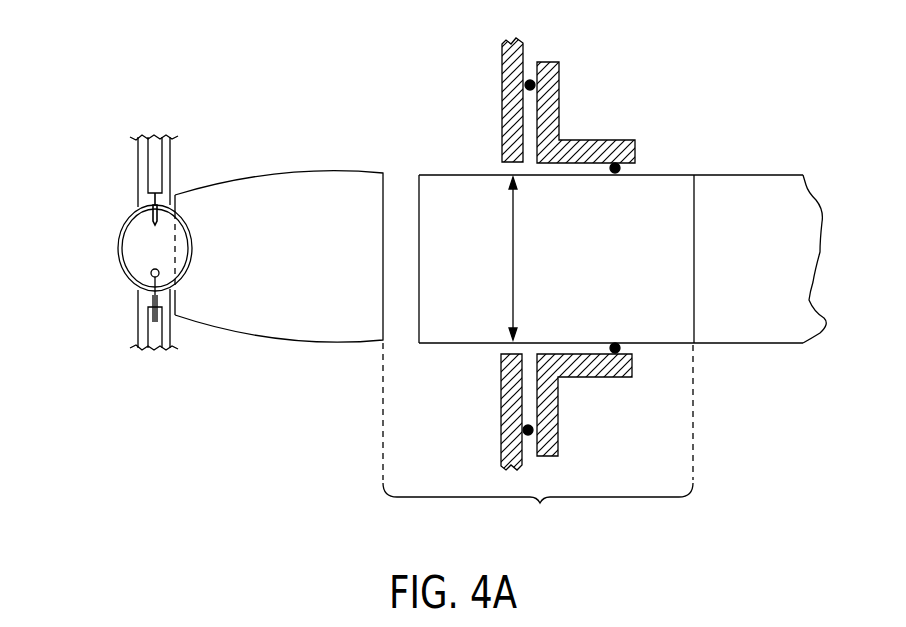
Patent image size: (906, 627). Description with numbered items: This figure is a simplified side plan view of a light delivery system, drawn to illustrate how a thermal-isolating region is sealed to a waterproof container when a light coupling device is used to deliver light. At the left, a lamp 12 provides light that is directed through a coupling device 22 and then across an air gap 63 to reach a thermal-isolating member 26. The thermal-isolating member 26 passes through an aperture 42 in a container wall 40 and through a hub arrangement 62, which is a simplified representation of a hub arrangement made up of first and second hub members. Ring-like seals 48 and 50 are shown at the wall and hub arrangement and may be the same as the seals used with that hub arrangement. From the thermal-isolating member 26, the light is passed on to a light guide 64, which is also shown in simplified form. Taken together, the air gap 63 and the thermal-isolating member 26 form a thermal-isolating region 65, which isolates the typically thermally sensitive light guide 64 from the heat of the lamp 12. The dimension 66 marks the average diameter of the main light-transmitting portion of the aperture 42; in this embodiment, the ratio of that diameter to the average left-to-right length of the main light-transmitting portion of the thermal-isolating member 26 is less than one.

The lamp 12 is at (138, 237).
The coupling device 22 is at (275, 176).
The thermal-isolating member 26 is at (479, 264).
The container wall 40 is at (510, 78).
The aperture 42 is at (499, 352).
The ring-like seal 48 is at (540, 82).
The ring-like seal 50 is at (618, 160).
The hub arrangement 62 is at (608, 377).
The air gap 63 is at (405, 200).
The light guide 64 is at (771, 270).
The thermal-isolating region 65 is at (538, 441).
The average diameter of the main light-transmitting portion of the aperture 66 is at (515, 247).